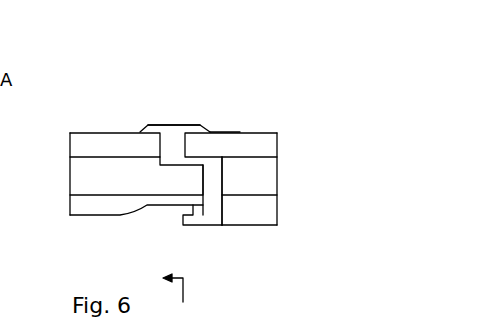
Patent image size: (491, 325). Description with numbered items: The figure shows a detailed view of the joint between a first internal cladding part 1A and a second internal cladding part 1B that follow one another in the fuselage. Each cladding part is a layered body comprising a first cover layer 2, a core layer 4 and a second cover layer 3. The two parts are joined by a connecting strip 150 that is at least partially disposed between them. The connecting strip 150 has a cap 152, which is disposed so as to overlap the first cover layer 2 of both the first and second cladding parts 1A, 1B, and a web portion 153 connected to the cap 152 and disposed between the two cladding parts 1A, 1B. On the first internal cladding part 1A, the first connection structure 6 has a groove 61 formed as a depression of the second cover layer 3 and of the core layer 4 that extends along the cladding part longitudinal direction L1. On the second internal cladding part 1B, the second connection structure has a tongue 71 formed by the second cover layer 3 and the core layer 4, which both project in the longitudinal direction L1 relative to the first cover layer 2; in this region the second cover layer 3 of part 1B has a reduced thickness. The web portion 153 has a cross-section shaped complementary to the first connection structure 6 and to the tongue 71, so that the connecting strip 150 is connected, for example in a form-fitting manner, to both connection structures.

The second internal cladding part 1B is at (79, 127).
The first internal cladding part 1A is at (268, 106).
The first cover layer 2 is at (112, 148).
The second cover layer 3 is at (90, 215).
The core layer 4 is at (69, 183).
The first connection structure 6 is at (227, 124).
The groove 61 is at (225, 193).
The tongue 71 is at (203, 181).
The connecting strip 150 is at (183, 106).
The cap 152 is at (159, 124).
The web portion 153 is at (213, 175).
The cladding part longitudinal direction L1 is at (178, 299).